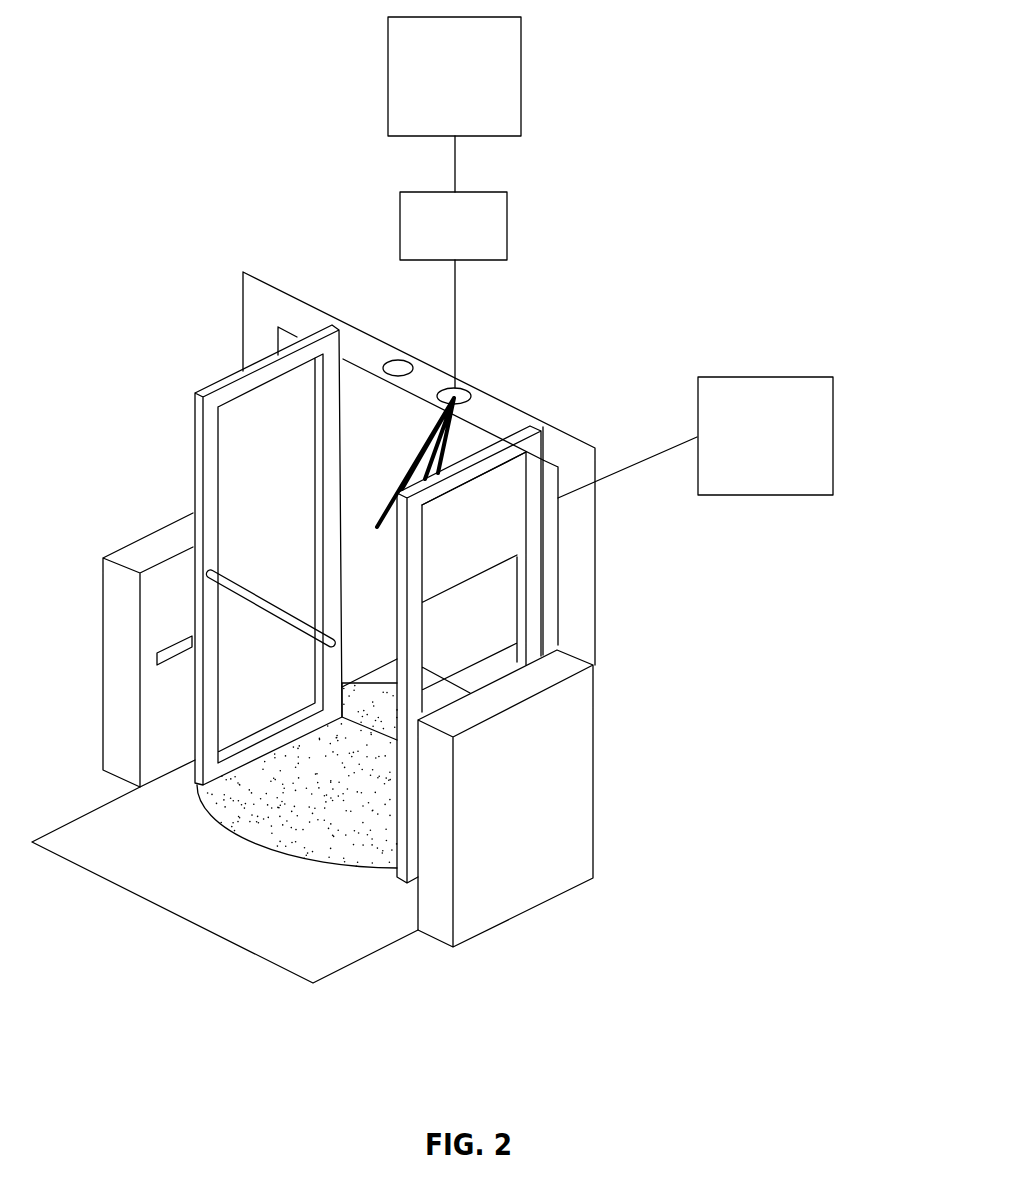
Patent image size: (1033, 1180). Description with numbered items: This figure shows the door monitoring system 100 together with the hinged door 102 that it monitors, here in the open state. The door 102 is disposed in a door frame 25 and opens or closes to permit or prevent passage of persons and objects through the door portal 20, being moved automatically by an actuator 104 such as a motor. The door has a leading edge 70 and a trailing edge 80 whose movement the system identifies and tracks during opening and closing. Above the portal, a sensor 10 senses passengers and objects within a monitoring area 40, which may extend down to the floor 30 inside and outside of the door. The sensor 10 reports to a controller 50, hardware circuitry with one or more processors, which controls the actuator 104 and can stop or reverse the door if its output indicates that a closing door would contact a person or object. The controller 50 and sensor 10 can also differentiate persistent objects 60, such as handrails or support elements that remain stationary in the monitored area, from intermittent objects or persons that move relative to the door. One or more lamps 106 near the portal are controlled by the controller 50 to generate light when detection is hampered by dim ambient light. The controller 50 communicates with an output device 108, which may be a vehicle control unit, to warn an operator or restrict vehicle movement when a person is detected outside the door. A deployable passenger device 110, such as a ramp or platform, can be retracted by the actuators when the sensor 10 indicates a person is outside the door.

The sensor 10 is at (474, 381).
The door portal 20 is at (358, 418).
The door frame 25 is at (580, 532).
The floor 30 is at (328, 957).
The monitoring area 40 is at (190, 788).
The controller 50 is at (472, 243).
The persistent object 60 is at (135, 560).
The leading edge 70 is at (197, 472).
The trailing edge 80 is at (330, 350).
The door monitoring system 100 is at (886, 489).
The hinged door 102 is at (478, 562).
The actuator 104 is at (792, 450).
The lamp 106 is at (187, 633).
The output device 108 is at (482, 93).
The deployable passenger device 110 is at (380, 683).